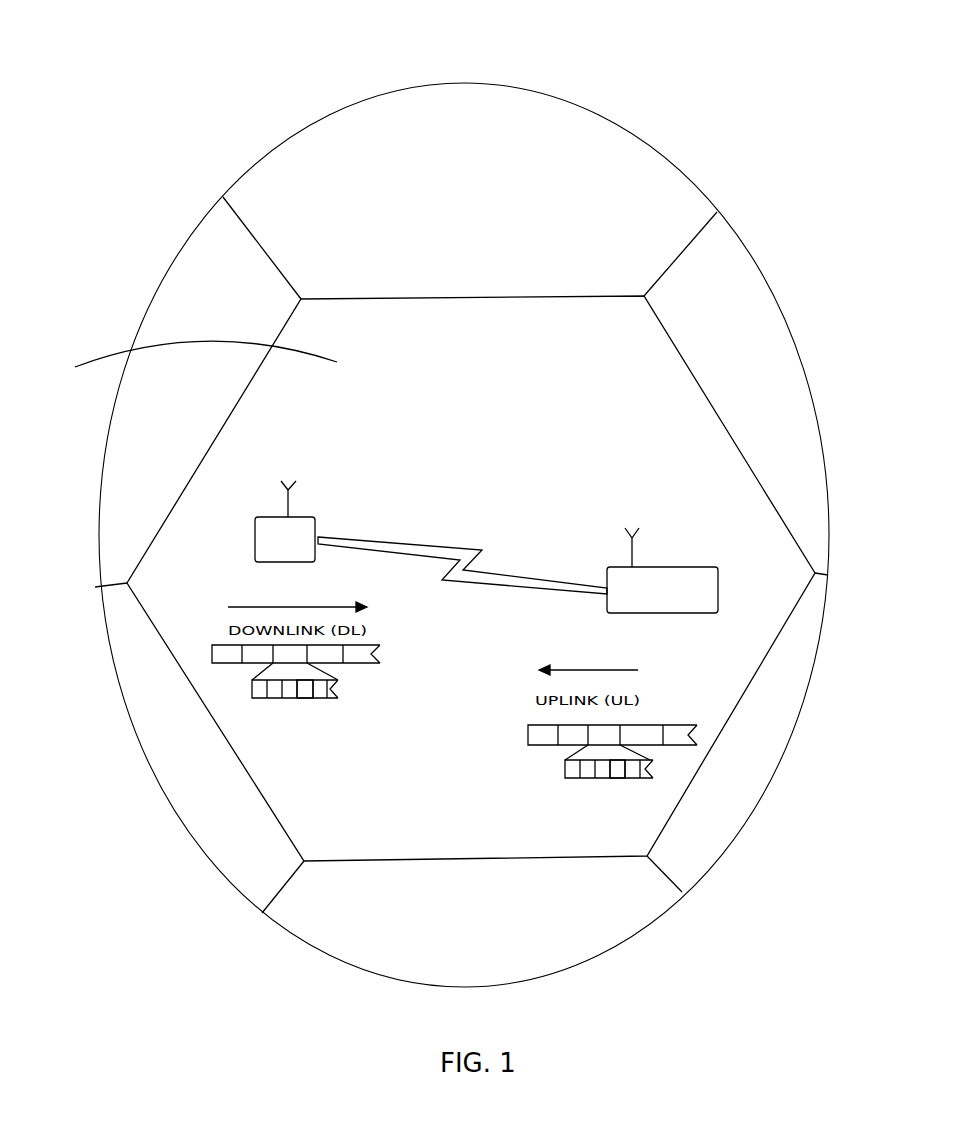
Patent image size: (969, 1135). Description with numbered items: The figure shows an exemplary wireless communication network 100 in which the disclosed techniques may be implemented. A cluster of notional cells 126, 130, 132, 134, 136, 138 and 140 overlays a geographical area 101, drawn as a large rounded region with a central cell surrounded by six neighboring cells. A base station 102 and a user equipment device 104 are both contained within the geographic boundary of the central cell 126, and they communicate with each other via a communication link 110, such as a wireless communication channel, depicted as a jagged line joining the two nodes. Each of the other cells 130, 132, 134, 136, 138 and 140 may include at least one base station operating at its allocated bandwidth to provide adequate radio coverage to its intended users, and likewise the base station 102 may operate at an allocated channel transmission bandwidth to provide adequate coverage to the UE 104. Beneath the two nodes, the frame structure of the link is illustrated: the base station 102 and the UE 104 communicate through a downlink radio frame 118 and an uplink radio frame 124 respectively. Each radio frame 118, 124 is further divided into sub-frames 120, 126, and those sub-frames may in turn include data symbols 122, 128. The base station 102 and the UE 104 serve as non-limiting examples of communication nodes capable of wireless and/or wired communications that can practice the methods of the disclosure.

The wireless communication network 100 is at (410, 46).
The geographical area 101 is at (607, 110).
The base station 102 is at (255, 533).
The user equipment device 104 is at (687, 567).
The communication link 110 is at (458, 542).
The downlink radio frame 118 is at (212, 656).
The sub-frame 120 is at (250, 690).
The data symbol 122 is at (315, 698).
The uplink radio frame 124 is at (665, 722).
The cell 126 is at (565, 773).
The data symbol 128 is at (185, 358).
The cell 130 is at (183, 263).
The cell 132 is at (317, 147).
The cell 134 is at (740, 285).
The cell 136 is at (710, 837).
The cell 138 is at (353, 928).
The cell 140 is at (187, 805).